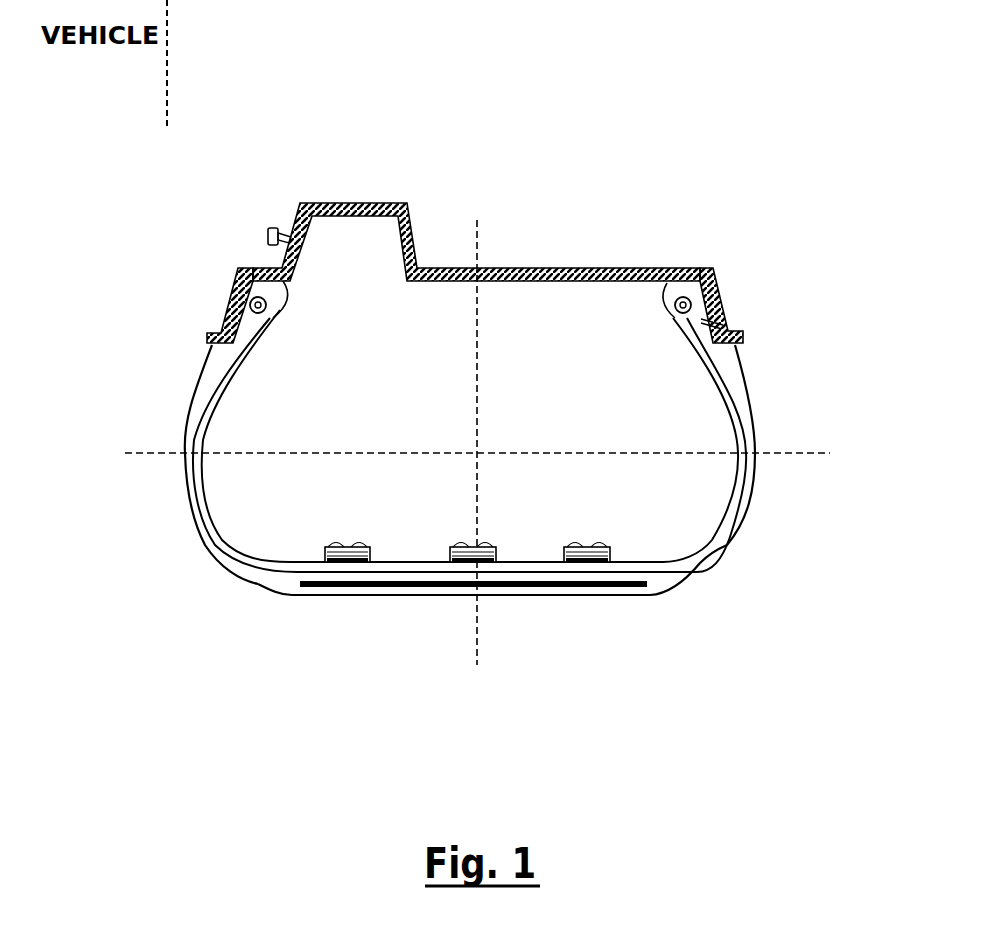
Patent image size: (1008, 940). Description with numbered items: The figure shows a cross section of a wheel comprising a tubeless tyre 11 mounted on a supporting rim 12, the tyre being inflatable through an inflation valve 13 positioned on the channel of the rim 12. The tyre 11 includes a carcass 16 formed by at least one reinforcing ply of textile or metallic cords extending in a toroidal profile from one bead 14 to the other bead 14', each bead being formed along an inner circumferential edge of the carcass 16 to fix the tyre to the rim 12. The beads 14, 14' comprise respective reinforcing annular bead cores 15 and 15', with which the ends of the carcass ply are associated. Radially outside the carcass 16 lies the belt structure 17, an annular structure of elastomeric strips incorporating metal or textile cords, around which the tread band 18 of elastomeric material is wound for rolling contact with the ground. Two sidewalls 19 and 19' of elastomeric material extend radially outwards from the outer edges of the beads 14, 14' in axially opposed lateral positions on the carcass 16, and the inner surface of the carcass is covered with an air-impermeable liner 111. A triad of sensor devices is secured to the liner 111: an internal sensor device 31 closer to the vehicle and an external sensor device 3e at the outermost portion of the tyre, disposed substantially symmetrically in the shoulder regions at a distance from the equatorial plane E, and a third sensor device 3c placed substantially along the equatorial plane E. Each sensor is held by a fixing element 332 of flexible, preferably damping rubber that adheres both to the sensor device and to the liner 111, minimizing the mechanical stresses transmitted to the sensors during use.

The tyre 11 is at (733, 556).
The supporting rim 12 is at (437, 268).
The inflation valve 13 is at (277, 228).
The bead 14 is at (193, 300).
The bead 14' is at (792, 305).
The bead core 15 is at (314, 322).
The bead core 15' is at (627, 324).
The carcass 16 is at (217, 527).
The belt structure 17 is at (300, 582).
The tread band 18 is at (528, 592).
The sidewall 19 is at (157, 464).
The sidewall 19' is at (807, 445).
The liner 111 is at (421, 562).
The internal sensor device 31 is at (345, 543).
The third sensor device 3c is at (490, 544).
The external sensor device 3e is at (583, 544).
The fixing element 332 is at (338, 560).
The equatorial plane E is at (487, 308).